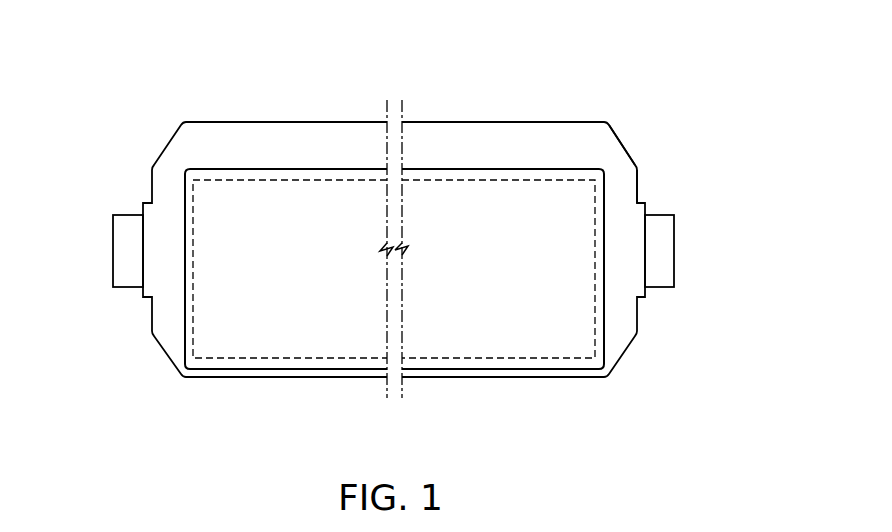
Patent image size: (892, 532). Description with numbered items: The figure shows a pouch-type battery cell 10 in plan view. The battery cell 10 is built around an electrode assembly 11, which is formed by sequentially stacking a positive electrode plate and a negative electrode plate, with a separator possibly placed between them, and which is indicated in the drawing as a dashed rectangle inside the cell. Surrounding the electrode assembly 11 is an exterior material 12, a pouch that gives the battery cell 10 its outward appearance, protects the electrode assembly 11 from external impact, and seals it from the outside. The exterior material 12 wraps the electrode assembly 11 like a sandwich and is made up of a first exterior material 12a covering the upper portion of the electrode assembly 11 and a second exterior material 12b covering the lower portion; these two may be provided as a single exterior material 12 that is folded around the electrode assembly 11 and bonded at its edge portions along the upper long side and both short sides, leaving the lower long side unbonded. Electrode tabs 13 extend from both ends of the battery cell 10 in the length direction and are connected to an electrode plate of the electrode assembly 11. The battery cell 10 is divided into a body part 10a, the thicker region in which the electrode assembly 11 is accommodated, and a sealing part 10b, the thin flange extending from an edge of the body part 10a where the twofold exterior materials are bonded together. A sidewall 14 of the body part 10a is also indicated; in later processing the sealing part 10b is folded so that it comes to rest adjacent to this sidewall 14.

The battery cell 10 is at (410, 37).
The body part 10a is at (553, 197).
The sealing part 10b is at (480, 140).
The electrode assembly 11 is at (537, 358).
The exterior material 12 is at (724, 114).
The first exterior material 12a is at (627, 190).
The second exterior material 12b is at (620, 168).
The electrode tabs 13 is at (130, 282).
The sidewall 14 is at (302, 168).